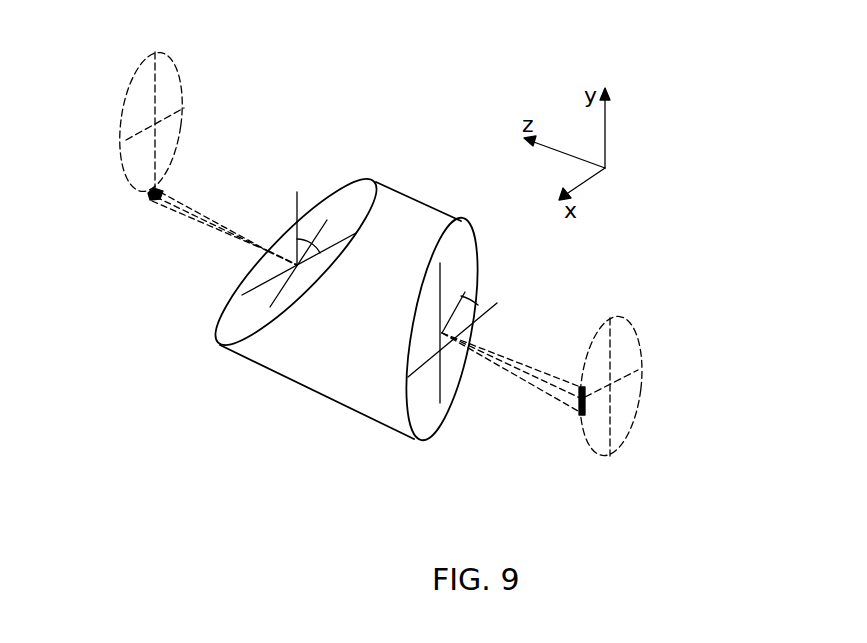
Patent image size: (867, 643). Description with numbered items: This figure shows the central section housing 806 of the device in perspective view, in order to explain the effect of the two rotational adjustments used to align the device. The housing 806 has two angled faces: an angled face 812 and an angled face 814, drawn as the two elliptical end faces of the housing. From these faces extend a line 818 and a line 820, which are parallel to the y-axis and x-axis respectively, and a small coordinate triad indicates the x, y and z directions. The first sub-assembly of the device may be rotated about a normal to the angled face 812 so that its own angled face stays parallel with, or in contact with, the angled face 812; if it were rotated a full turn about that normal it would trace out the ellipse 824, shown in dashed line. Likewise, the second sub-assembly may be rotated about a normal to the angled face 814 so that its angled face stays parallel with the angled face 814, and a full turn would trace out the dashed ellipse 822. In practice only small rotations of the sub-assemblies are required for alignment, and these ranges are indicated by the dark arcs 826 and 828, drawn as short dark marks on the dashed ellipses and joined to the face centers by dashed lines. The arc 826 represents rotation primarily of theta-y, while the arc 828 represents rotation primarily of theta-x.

The central section housing 806 is at (420, 203).
The angled face 812 is at (463, 250).
The angled face 814 is at (355, 198).
The line 818 is at (497, 304).
The line 820 is at (297, 207).
The ellipse 822 is at (638, 405).
The ellipse 824 is at (177, 64).
The dark arc 826 is at (579, 417).
The dark arc 828 is at (152, 197).